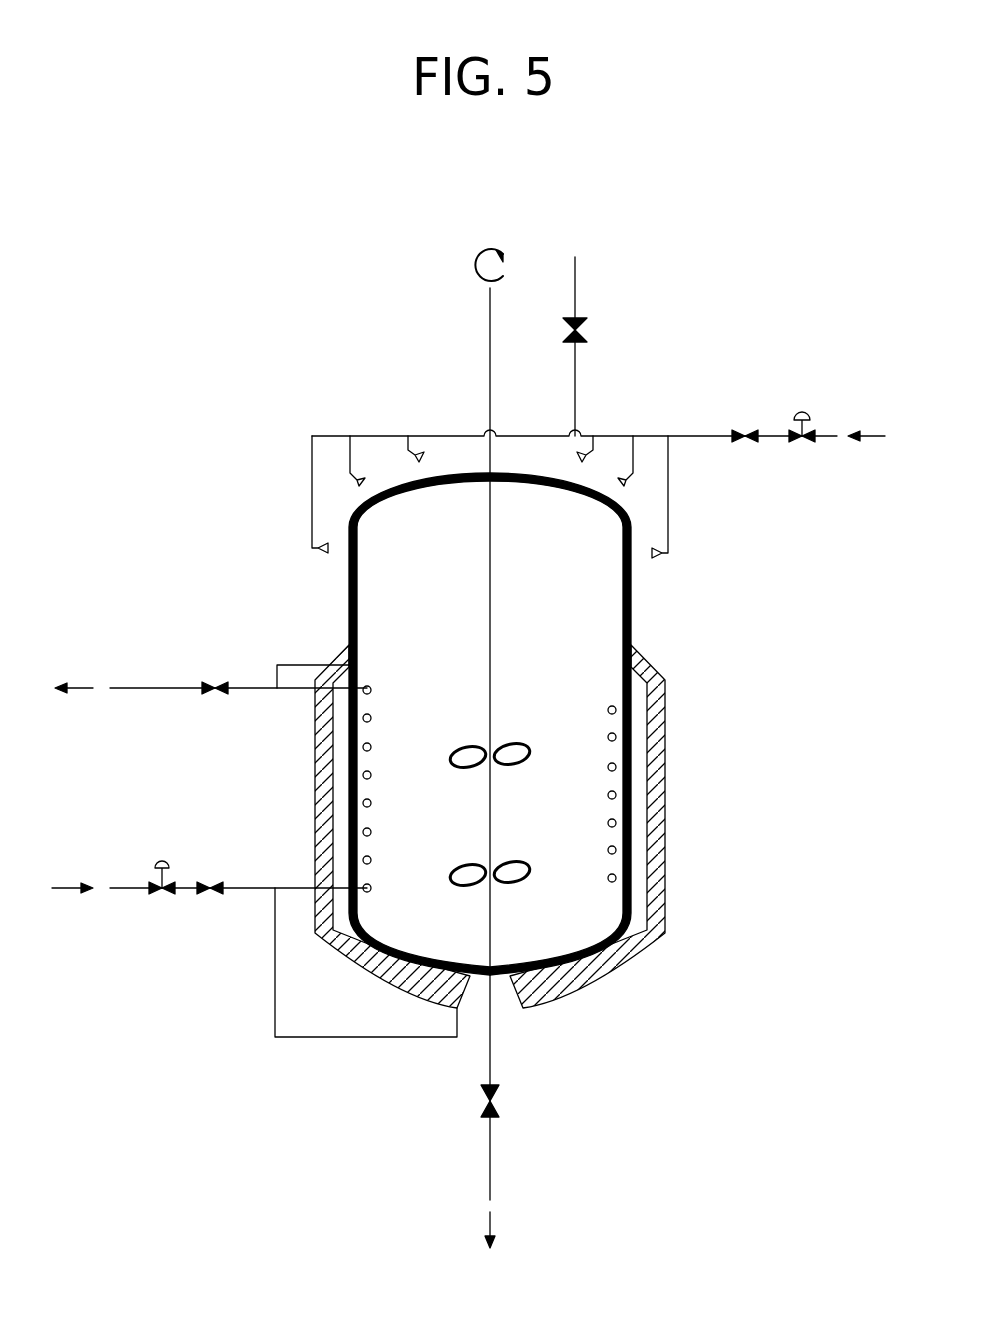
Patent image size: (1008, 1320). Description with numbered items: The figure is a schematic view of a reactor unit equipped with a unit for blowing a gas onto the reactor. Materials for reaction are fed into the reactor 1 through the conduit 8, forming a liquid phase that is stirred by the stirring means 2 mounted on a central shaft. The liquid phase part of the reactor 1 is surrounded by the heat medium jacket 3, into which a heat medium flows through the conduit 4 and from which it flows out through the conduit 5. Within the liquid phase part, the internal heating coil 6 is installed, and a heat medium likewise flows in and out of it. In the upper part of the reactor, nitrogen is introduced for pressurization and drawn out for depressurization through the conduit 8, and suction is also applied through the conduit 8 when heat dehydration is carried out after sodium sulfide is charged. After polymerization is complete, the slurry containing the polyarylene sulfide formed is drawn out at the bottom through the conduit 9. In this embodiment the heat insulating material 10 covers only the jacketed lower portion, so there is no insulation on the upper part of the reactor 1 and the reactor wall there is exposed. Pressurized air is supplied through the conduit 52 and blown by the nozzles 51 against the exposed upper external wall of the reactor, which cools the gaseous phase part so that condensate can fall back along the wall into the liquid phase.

The reactor 1 is at (358, 626).
The stirring means 2 is at (517, 752).
The heat medium jacket 3 is at (638, 840).
The conduit 4 is at (125, 891).
The conduit 5 is at (137, 688).
The internal heating coil 6 is at (372, 860).
The conduit 8 is at (577, 285).
The conduit 9 is at (491, 1163).
The heat insulating material 10 is at (663, 770).
The nozzles 51 is at (653, 562).
The conduit 52 is at (690, 437).